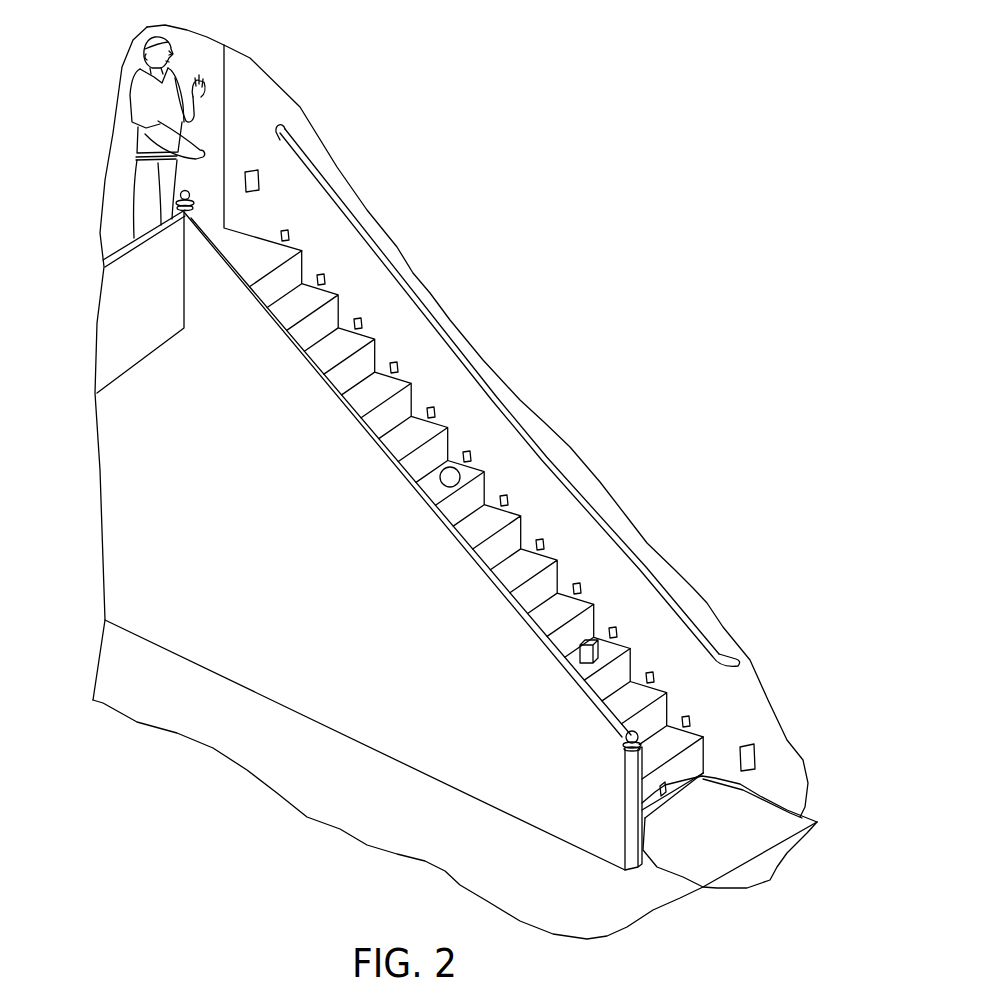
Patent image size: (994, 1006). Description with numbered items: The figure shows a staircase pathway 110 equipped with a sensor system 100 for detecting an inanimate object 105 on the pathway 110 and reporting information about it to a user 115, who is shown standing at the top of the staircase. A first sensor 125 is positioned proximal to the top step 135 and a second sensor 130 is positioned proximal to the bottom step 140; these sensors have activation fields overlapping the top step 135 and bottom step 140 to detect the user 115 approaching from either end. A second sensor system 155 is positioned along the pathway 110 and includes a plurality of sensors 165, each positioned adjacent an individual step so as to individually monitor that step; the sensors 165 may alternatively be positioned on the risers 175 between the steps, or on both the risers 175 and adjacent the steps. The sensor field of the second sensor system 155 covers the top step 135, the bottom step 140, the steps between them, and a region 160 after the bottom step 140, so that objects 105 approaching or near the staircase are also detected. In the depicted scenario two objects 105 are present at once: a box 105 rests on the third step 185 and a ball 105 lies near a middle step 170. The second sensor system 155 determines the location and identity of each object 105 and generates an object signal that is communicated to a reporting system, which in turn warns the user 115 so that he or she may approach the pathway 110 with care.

The sensor system 100 is at (636, 166).
The inanimate object 105 is at (442, 470).
The pathway 110 is at (718, 858).
The user 115 is at (130, 95).
The first sensor 125 is at (250, 170).
The second sensor 130 is at (750, 750).
The top step 135 is at (243, 248).
The bottom step 140 is at (663, 757).
The second sensor system 155 is at (201, 279).
The region after the bottom step 160 is at (748, 817).
The sensors 165 is at (282, 236).
The middle step 170 is at (437, 492).
The risers 175 is at (650, 797).
The third step 185 is at (615, 653).